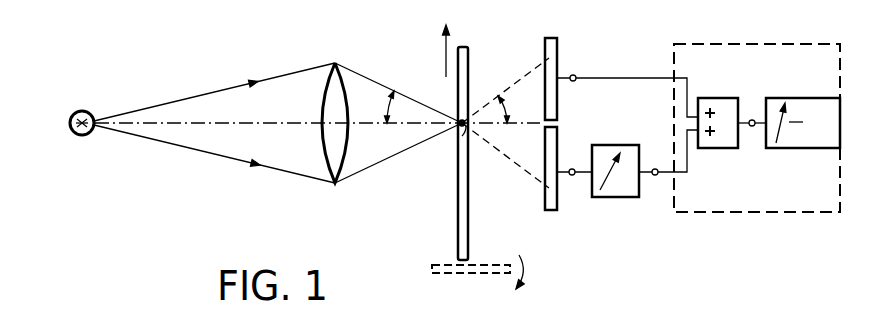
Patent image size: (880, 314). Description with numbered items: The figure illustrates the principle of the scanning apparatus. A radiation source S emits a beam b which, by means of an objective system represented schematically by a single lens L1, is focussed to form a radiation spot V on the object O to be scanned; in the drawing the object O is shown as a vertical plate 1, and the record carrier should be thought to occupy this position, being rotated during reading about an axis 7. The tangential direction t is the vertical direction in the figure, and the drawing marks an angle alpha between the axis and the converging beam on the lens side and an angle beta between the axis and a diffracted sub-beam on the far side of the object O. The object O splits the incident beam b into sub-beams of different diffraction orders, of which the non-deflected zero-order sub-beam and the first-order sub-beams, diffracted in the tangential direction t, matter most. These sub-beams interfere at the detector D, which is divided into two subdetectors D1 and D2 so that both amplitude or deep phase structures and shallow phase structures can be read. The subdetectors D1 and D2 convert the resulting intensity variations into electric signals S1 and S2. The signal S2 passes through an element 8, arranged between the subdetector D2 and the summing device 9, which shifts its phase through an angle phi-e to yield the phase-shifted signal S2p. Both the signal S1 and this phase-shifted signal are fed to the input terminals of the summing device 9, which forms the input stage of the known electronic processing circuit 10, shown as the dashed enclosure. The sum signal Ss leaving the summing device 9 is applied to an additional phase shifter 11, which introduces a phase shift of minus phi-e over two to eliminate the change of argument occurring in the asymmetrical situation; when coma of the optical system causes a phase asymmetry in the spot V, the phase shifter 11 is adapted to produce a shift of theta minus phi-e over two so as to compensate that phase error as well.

The transparent plate / disc 1 is at (465, 62).
The axis 7 is at (470, 275).
The element 8 is at (611, 198).
The summing device 9 is at (721, 150).
The electronic processing circuit 10 is at (742, 213).
The additional phase shifter 11 is at (804, 150).
The radiation source S is at (84, 136).
The beam b is at (175, 100).
The lens L1 is at (341, 170).
The radiation spot V is at (457, 127).
The object O is at (452, 201).
The tangential direction t is at (439, 51).
The aperture angle alpha is at (379, 107).
The diffraction angle beta is at (505, 123).
The detector D is at (556, 28).
The first subdetector D1 is at (558, 42).
The second subdetector D2 is at (551, 212).
The electric signal S1 is at (574, 82).
The electric signal S2 is at (572, 176).
The phase-shifted signal S2p is at (655, 176).
The sum signal Ss is at (754, 128).